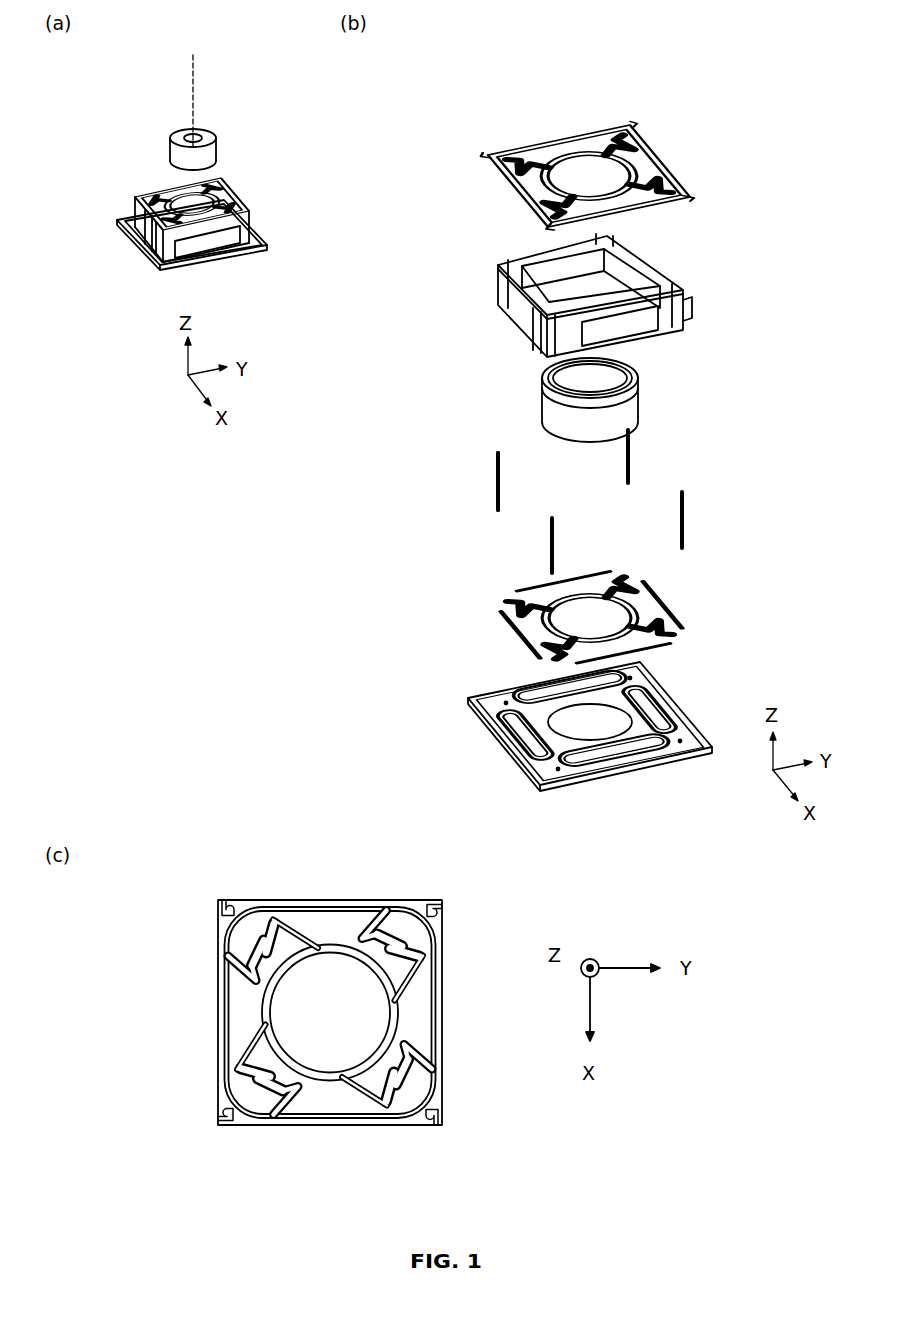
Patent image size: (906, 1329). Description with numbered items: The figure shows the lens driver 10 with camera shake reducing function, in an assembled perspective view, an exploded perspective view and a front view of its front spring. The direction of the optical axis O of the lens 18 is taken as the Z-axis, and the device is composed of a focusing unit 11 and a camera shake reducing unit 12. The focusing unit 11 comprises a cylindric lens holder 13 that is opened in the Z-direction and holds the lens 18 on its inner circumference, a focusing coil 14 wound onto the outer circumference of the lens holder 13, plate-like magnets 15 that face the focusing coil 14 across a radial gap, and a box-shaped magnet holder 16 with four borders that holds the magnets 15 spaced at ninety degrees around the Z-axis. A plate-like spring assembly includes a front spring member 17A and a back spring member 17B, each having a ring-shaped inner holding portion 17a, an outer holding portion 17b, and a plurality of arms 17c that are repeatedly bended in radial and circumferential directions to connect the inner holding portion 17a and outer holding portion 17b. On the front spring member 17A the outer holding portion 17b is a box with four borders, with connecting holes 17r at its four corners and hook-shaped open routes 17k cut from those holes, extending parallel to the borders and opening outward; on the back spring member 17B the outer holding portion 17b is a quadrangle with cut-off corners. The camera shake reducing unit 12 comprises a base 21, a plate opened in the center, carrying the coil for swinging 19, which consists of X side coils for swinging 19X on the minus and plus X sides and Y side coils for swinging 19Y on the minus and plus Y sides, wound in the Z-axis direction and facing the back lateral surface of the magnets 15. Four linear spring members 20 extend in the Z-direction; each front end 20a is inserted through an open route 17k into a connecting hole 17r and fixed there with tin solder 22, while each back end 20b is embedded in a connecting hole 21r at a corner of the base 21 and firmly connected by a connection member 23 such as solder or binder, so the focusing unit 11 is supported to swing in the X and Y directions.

The lens driver with camera shake reducing function 10 is at (125, 160).
The focusing unit 11 is at (745, 325).
The camera shake reducing unit 12 is at (415, 563).
The lens holder 13 is at (641, 377).
The focusing coil 14 is at (632, 412).
The magnet 15 is at (656, 257).
The magnet holder 16 is at (680, 316).
The front spring member 17A is at (646, 157).
The back spring member 17B is at (655, 590).
The inner holding portion 17a is at (566, 160).
The outer holding portion 17b is at (532, 197).
The arms 17c is at (604, 150).
The open routes 17k is at (681, 192).
The connecting holes 17r is at (683, 198).
The lens 18 is at (212, 150).
The coil for swinging 19 is at (520, 776).
The X side coils for swinging 19X is at (593, 718).
The Y side coils for swinging 19Y is at (587, 721).
The linear spring member 20 is at (250, 236).
The front end of spring member 20a is at (494, 452).
The back end of spring member 20b is at (494, 506).
The base 21 is at (492, 739).
The connecting holes 21r is at (558, 770).
The tin solder 22 is at (137, 197).
The firm connection member 23 is at (152, 264).
The optical axis O is at (190, 95).